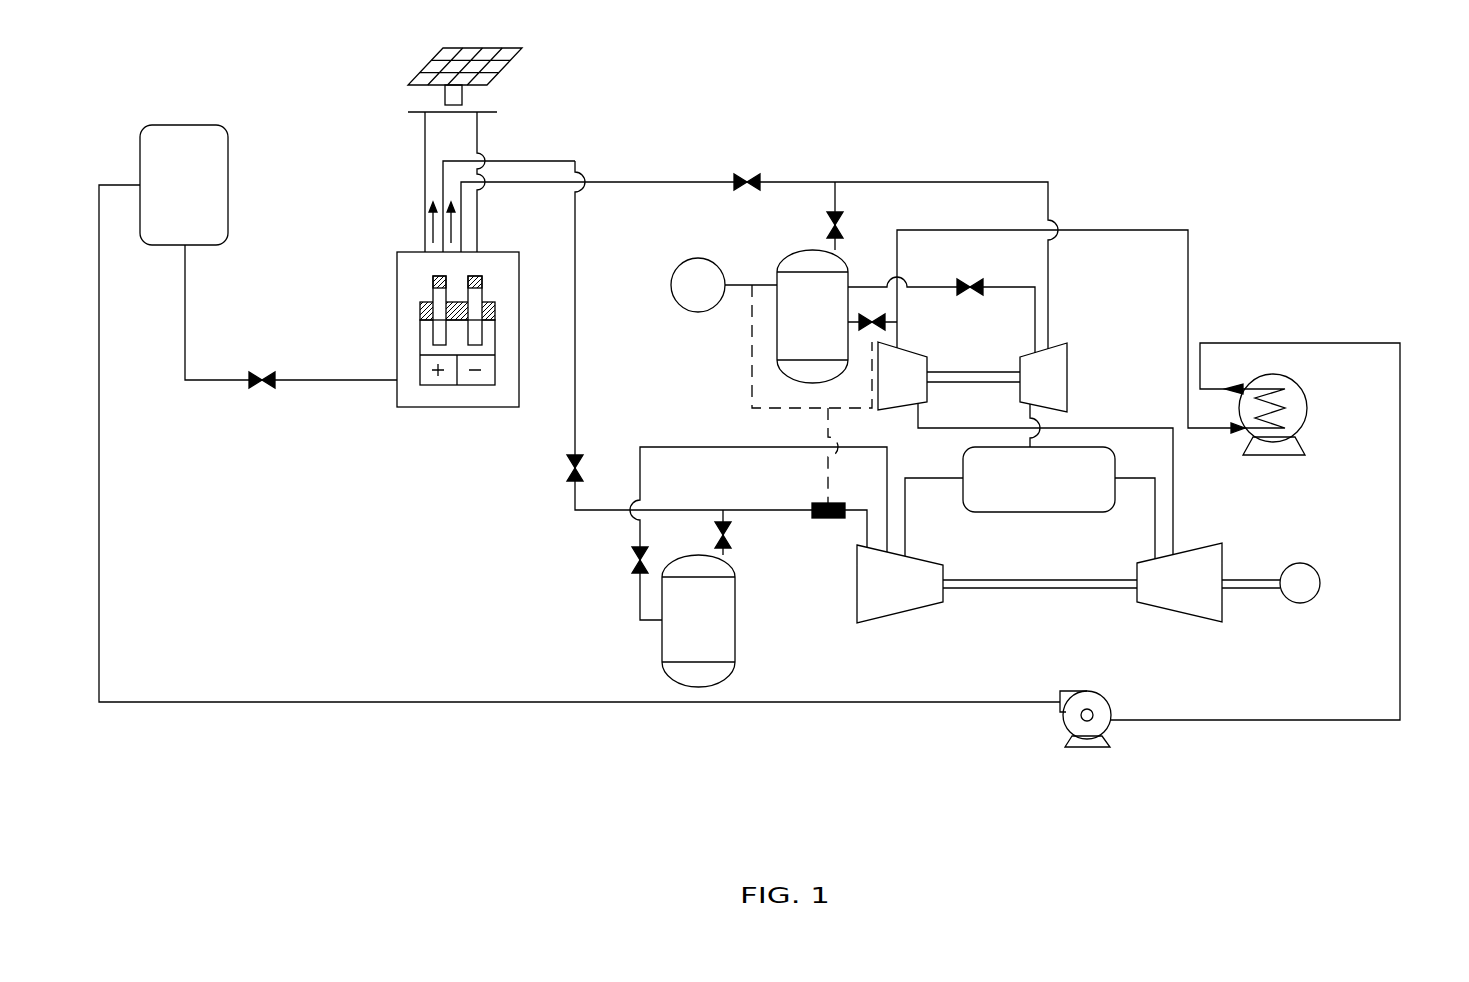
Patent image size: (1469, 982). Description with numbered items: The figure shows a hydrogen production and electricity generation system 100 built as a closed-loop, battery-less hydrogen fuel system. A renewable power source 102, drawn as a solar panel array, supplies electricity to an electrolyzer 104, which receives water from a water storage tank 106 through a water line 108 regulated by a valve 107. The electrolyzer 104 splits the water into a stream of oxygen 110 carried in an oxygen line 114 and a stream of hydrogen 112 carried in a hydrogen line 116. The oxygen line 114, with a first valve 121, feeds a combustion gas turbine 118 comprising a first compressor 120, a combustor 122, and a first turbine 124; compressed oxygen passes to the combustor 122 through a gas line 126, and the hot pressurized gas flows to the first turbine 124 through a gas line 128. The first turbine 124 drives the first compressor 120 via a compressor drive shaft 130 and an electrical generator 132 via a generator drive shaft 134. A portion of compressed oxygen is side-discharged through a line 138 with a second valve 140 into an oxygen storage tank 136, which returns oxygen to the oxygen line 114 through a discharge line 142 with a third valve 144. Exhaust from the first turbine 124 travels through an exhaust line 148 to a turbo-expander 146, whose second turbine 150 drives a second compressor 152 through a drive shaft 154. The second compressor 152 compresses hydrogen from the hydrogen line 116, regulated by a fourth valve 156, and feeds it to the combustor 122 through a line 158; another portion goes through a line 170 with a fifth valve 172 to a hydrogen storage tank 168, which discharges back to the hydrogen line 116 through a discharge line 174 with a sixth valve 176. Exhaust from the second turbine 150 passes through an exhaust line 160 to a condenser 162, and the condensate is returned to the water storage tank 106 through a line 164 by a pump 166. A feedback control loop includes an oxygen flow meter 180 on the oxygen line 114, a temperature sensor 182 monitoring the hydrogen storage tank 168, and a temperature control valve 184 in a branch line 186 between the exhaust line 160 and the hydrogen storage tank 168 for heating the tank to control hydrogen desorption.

The hydrogen production and electricity generation system 100 is at (1156, 50).
The renewable power source 102 is at (376, 92).
The electrolyzer 104 is at (397, 299).
The water storage tank 106 is at (165, 198).
The valve 107 is at (263, 391).
The water line 108 is at (185, 299).
The stream of oxygen 110 is at (430, 228).
The stream of hydrogen 112 is at (456, 228).
The oxygen line 114 is at (556, 160).
The hydrogen line 116 is at (640, 178).
The combustion gas turbine 118 is at (1050, 612).
The first compressor 120 is at (881, 596).
The first valve 121 is at (567, 470).
The combustor 122 is at (1021, 492).
The first turbine 124 is at (1159, 596).
The gas line 126 is at (905, 528).
The gas line 128 is at (1152, 528).
The compressor drive shaft 130 is at (990, 575).
The electrical generator 132 is at (1320, 568).
The generator drive shaft 134 is at (1257, 575).
The oxygen storage tank 136 is at (679, 635).
The line 138 is at (655, 442).
The second valve 140 is at (632, 562).
The discharge line 142 is at (730, 556).
The third valve 144 is at (731, 538).
The turbo-expander 146 is at (964, 348).
The exhaust line 148 is at (1163, 425).
The second turbine 150 is at (883, 393).
The second compressor 152 is at (1024, 393).
The drive shaft 154 is at (958, 392).
The fourth valve 156 is at (748, 172).
The line 158 is at (1040, 418).
The exhaust line 160 is at (935, 228).
The condenser 162 is at (1308, 389).
The line 164 is at (99, 528).
The pump 166 is at (1105, 695).
The hydrogen storage tank 168 is at (793, 331).
The line 170 is at (922, 285).
The fifth valve 172 is at (975, 280).
The discharge line 174 is at (833, 248).
The sixth valve 176 is at (843, 222).
The oxygen flow meter 180 is at (826, 492).
The temperature sensor 182 is at (679, 298).
The temperature control valve 184 is at (874, 314).
The branch line 186 is at (893, 322).